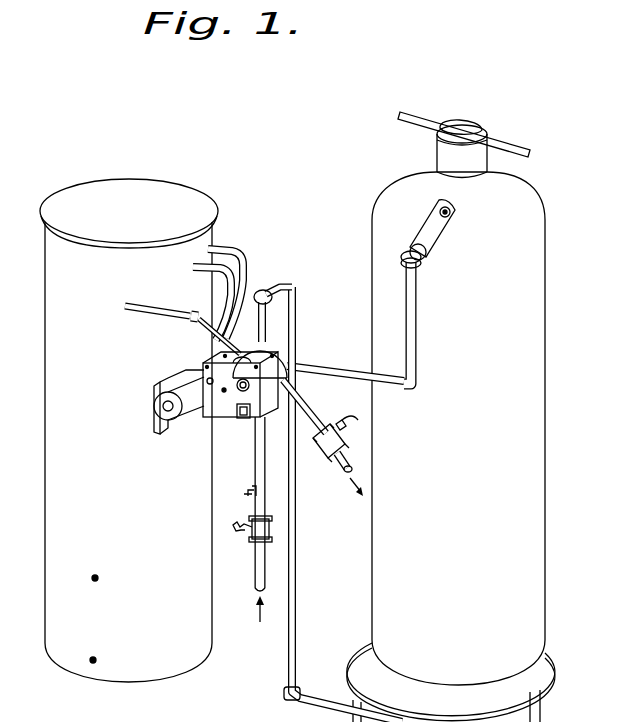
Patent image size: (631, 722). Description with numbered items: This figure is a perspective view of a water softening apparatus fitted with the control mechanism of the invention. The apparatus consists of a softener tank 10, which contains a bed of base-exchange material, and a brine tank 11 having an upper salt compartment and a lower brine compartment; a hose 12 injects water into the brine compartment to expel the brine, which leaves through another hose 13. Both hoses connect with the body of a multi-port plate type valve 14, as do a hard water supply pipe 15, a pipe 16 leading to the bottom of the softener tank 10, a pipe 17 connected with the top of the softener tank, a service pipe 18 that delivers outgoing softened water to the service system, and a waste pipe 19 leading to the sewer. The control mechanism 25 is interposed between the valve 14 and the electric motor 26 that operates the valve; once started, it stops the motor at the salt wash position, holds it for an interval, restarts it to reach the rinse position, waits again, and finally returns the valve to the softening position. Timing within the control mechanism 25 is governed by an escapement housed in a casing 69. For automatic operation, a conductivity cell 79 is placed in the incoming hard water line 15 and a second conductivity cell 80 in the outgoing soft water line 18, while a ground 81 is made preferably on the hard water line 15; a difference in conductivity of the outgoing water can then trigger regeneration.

The softener tank 10 is at (540, 388).
The brine tank 11 is at (68, 440).
The hose 12 is at (200, 266).
The hose 13 is at (237, 254).
The multi-port plate type valve 14 is at (292, 351).
The hard water supply pipe 15 is at (260, 455).
The pipe 16 is at (258, 290).
The pipe 17 is at (325, 369).
The service pipe 18 is at (302, 410).
The waste pipe 19 is at (205, 326).
The control mechanism 25 is at (213, 403).
The electric motor 26 is at (172, 418).
The casing of escapement 69 is at (243, 419).
The conductivity cell 79 is at (246, 538).
The conductivity cell 80 is at (340, 424).
The ground 81 is at (245, 492).